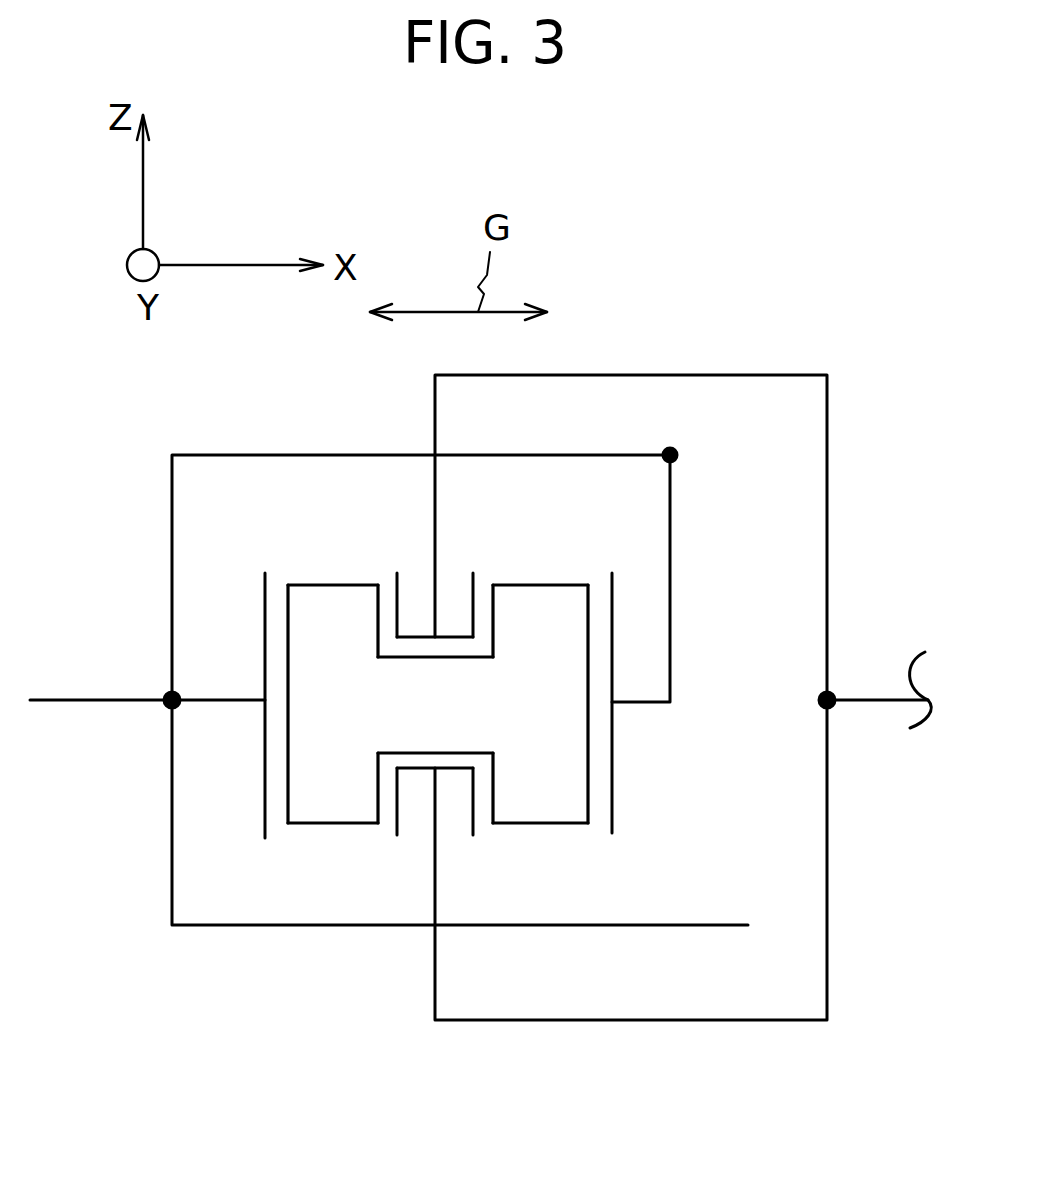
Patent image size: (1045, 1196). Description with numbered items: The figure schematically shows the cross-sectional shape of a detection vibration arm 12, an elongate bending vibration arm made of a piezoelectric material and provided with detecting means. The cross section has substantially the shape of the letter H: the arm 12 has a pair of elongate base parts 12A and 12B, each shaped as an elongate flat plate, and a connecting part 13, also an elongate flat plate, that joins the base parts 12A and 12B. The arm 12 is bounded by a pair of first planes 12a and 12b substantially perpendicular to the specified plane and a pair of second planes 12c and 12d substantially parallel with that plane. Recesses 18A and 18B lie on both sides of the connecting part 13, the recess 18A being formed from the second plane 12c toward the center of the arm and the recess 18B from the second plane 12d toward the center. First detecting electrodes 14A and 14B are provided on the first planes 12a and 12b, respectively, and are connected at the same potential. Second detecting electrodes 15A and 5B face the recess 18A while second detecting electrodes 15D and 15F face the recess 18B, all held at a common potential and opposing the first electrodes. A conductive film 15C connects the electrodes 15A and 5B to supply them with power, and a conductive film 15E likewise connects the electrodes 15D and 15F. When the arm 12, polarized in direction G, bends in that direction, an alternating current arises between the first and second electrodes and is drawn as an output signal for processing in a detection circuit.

The detection vibration arm 12 is at (328, 547).
The base part 12A is at (310, 597).
The base part 12B is at (563, 592).
The first plane 12a is at (287, 783).
The first plane 12b is at (592, 645).
The second plane 12c is at (346, 583).
The second plane 12d is at (293, 825).
The connecting part 13 is at (385, 728).
The first detecting electrode 14A is at (263, 603).
The first detecting electrode 14B is at (613, 738).
The second detecting electrode 15A is at (400, 600).
The electrode portion 5B is at (475, 623).
The conductive film 15C is at (452, 638).
The second detecting electrode 15D is at (397, 803).
The conductive film 15E is at (448, 770).
The second detecting electrode 15F is at (475, 823).
The recess 18A is at (385, 622).
The recess 18B is at (497, 777).